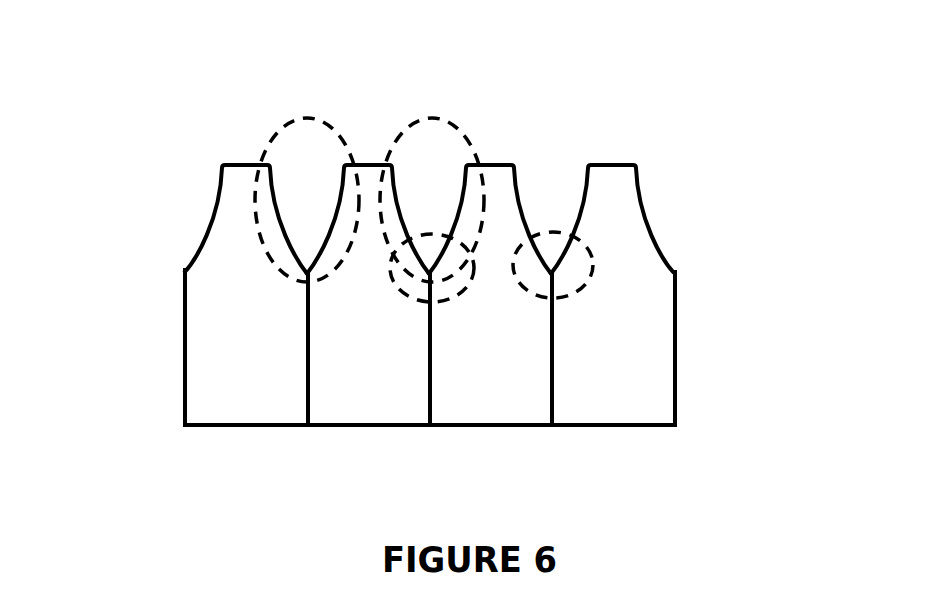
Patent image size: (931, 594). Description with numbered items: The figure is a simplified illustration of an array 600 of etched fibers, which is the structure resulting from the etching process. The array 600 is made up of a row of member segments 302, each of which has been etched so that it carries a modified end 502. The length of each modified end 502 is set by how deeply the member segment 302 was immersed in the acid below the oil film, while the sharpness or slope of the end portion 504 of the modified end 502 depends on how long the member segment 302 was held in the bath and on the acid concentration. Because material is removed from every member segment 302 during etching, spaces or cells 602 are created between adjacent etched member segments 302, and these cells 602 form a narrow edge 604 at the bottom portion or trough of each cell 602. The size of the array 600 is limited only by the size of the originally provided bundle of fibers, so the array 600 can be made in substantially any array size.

The member segment 302 is at (275, 392).
The modified end 502 is at (200, 160).
The end portion 504 is at (615, 162).
The array 600 is at (676, 178).
The cells 602 is at (428, 118).
The narrow edge 604 is at (594, 262).